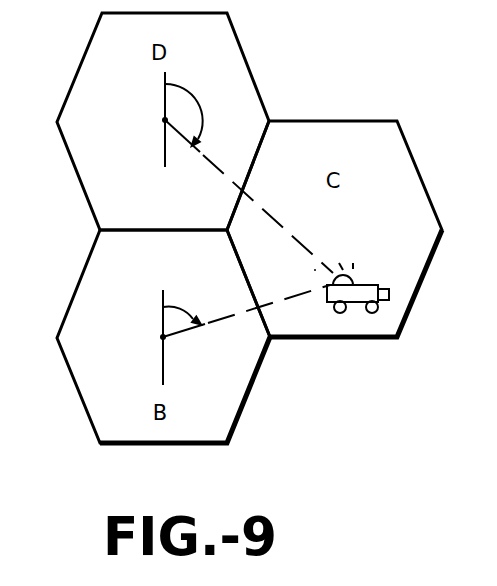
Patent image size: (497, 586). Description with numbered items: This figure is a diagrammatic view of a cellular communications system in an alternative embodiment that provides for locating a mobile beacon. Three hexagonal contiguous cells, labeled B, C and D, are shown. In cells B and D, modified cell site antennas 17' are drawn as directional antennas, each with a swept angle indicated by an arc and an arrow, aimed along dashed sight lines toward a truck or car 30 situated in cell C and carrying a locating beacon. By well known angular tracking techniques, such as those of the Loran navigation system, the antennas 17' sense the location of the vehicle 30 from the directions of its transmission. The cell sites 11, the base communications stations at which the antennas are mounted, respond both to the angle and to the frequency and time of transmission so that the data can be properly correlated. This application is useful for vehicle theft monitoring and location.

The modified cell site antenna 17' is at (216, 172).
The cell site 11 is at (165, 338).
The truck or car 30 is at (367, 285).